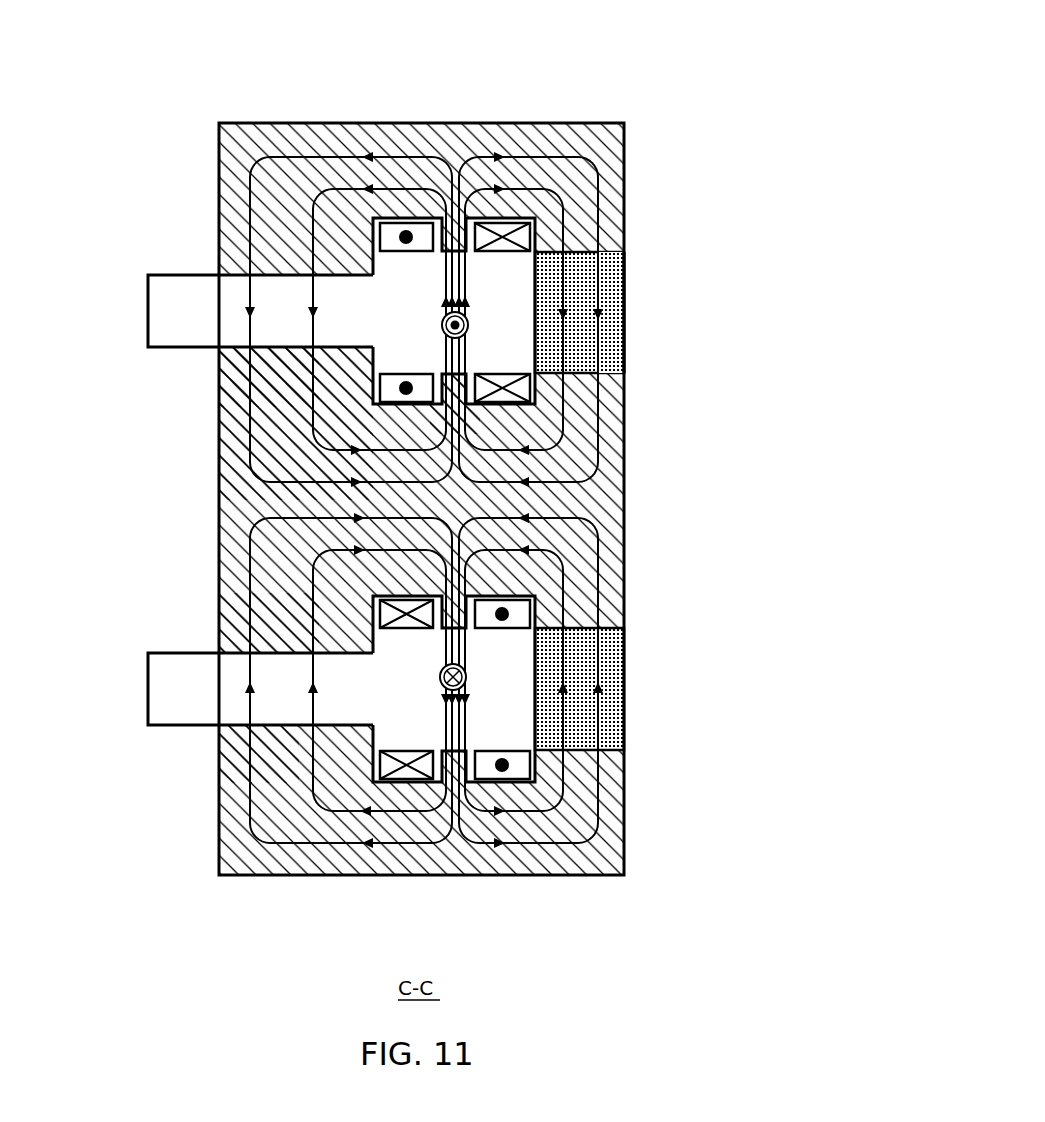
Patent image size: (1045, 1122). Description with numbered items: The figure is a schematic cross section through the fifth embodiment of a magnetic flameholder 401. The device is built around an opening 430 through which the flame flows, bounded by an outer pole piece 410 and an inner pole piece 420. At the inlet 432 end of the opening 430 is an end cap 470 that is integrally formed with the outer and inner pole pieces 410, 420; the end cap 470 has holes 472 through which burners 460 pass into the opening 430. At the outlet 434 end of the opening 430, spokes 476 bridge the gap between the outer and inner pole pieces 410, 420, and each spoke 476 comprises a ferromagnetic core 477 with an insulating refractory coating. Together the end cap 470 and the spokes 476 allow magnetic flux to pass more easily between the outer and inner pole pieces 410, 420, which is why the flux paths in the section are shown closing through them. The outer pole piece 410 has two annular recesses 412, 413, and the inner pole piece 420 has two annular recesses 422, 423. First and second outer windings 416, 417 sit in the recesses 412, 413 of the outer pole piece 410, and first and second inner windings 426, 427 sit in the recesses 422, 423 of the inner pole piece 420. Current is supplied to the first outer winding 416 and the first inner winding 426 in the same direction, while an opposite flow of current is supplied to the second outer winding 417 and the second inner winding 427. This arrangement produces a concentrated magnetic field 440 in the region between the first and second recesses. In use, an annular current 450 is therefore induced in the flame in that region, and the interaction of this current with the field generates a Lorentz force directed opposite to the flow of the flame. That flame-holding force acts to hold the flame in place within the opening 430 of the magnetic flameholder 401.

The magnetic flameholder 401 is at (770, 32).
The outer pole piece 410 is at (503, 122).
The annular recess 412 is at (403, 220).
The annular recess 413 is at (508, 222).
The first outer winding 416 is at (407, 768).
The second outer winding 417 is at (499, 770).
The inner pole piece 420 is at (626, 570).
The annular recess 422 is at (455, 445).
The annular recess 423 is at (500, 403).
The first inner winding 426 is at (417, 612).
The second inner winding 427 is at (507, 613).
The opening 430 is at (405, 733).
The inlet 432 is at (219, 723).
The outlet 434 is at (617, 737).
The concentrated magnetic field 440 is at (467, 355).
The annular current 450 is at (468, 325).
The burner 460 is at (171, 275).
The end cap 470 is at (237, 497).
The hole 472 is at (237, 362).
The spoke 476 is at (638, 311).
The ferromagnetic core 477 is at (622, 350).